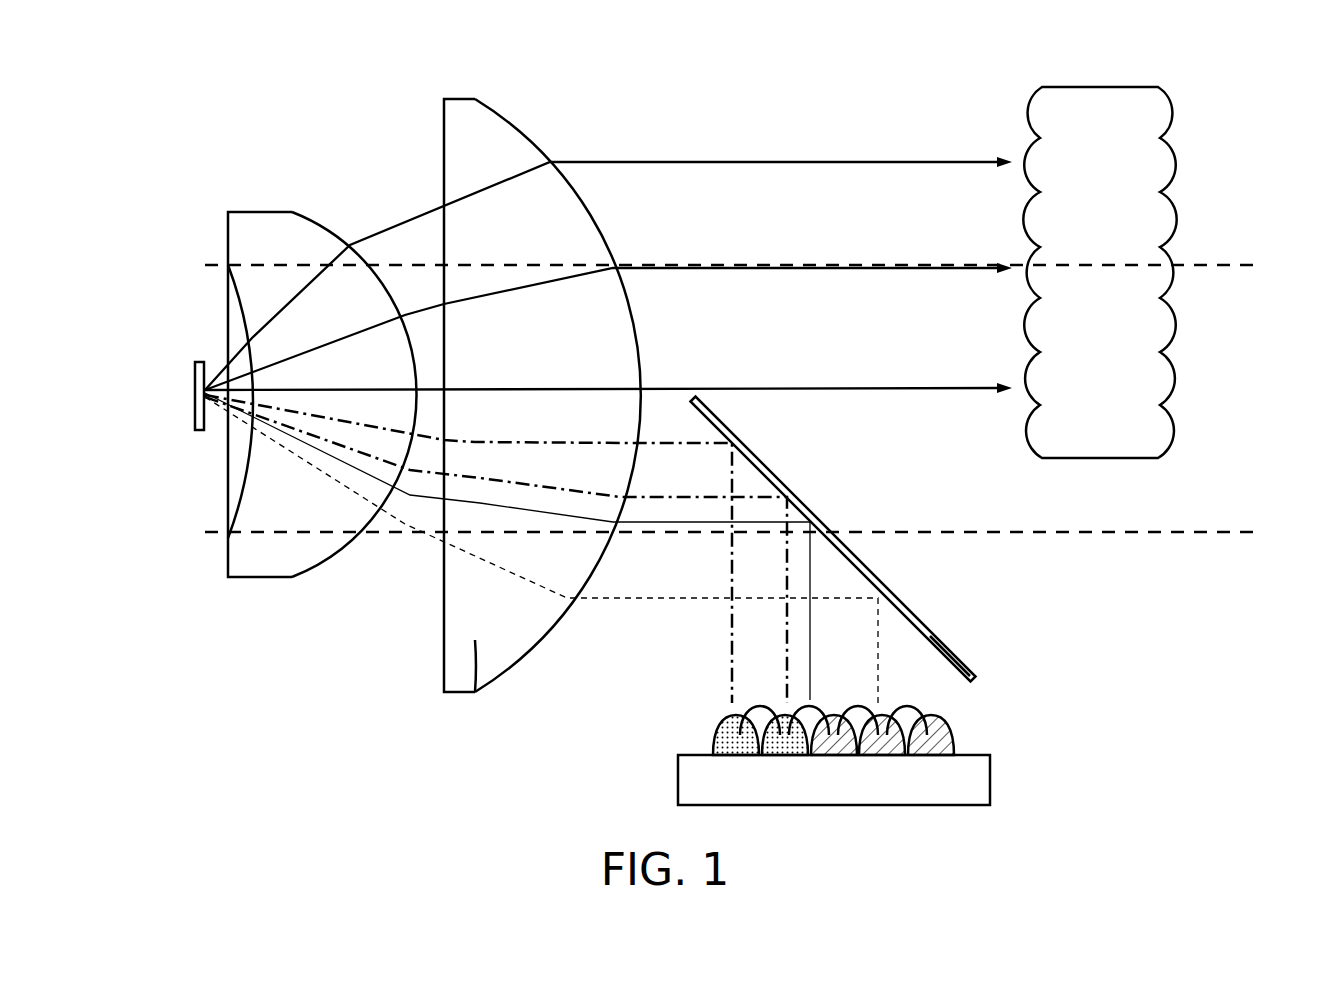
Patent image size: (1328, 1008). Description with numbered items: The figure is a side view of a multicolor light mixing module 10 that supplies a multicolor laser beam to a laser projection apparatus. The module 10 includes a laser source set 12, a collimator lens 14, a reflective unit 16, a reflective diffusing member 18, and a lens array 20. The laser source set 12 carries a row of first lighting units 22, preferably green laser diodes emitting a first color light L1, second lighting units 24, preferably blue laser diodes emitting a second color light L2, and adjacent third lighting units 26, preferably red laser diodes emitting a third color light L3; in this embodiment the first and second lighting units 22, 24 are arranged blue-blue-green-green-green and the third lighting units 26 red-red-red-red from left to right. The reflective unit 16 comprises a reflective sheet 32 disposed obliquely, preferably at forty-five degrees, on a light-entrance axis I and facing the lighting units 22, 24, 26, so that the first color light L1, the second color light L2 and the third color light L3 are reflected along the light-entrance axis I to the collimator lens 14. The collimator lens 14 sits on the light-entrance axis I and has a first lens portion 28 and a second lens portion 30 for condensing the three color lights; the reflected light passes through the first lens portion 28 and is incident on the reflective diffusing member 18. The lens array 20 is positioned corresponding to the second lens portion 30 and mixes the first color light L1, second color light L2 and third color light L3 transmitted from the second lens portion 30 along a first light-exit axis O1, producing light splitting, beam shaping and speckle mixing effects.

The multicolor light mixing module 10 is at (165, 93).
The laser source set 12 is at (1025, 788).
The collimator lens 14 is at (217, 190).
The reflective unit 16 is at (932, 610).
The reflective diffusing member 18 is at (196, 378).
The lens array 20 is at (1127, 87).
The first lighting unit 22 is at (940, 740).
The second lighting unit 24 is at (720, 733).
The third lighting unit 26 is at (903, 708).
The first lens portion 28 is at (500, 635).
The second lens portion 30 is at (540, 222).
The reflective sheet 32 is at (960, 658).
The first color light L1 is at (672, 602).
The second color light L2 is at (730, 690).
The third color light L3 is at (412, 492).
The first light-exit axis O1 is at (759, 265).
The light-entrance axis I is at (746, 532).